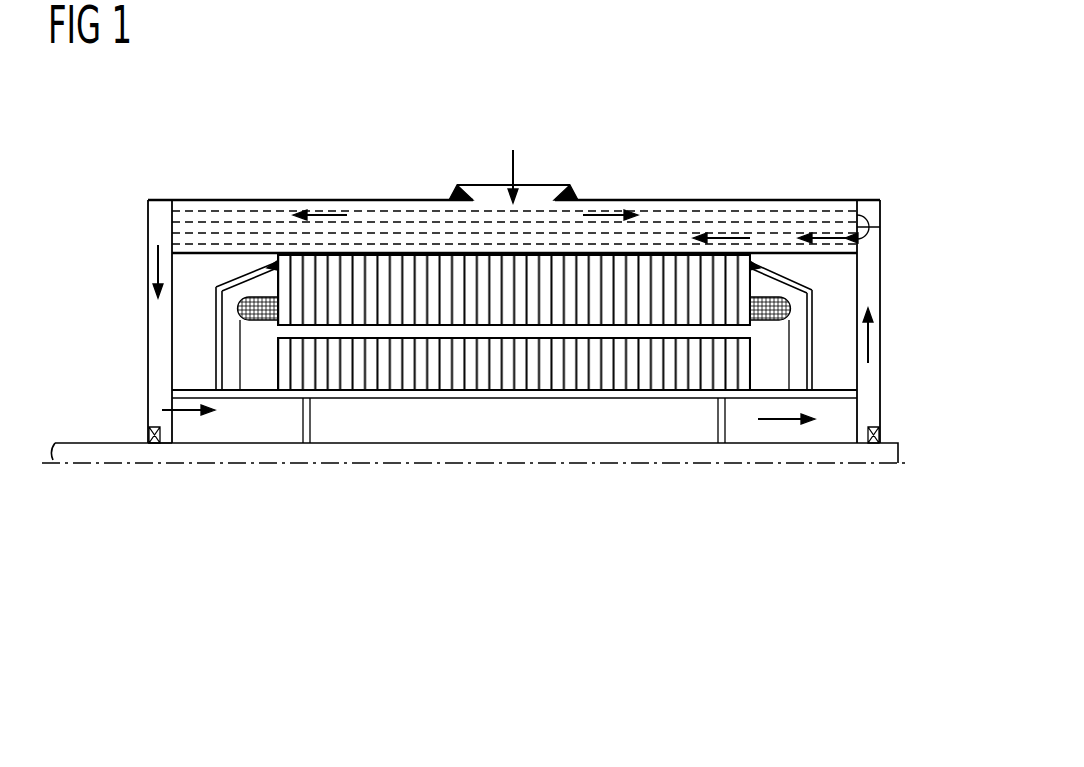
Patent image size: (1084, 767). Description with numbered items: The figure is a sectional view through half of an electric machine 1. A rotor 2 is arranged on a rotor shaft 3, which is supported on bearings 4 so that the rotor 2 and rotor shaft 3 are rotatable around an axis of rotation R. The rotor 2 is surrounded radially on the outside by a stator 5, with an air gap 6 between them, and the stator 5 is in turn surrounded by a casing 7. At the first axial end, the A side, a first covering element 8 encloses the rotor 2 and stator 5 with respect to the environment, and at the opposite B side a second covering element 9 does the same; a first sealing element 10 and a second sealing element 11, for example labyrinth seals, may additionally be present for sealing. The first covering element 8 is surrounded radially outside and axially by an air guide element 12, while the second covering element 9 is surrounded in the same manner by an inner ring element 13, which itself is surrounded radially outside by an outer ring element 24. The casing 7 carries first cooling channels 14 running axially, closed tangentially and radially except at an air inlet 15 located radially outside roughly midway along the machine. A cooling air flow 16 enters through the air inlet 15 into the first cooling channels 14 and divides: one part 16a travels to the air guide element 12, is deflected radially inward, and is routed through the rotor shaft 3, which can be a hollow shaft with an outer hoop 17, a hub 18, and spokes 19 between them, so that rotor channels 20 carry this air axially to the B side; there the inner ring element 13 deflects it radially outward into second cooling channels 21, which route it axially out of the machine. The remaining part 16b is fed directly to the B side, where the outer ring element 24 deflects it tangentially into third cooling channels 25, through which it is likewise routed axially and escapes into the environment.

The electric machine 1 is at (690, 100).
The rotor 2 is at (495, 360).
The rotor shaft 3 is at (127, 394).
The bearings 4 is at (148, 435).
The stator 5 is at (663, 277).
The air gap 6 is at (433, 330).
The casing 7 is at (198, 200).
The first covering element 8 is at (226, 282).
The second covering element 9 is at (793, 283).
The first sealing element 10 is at (270, 265).
The second sealing element 11 is at (760, 262).
The air guide element 12 is at (160, 217).
The inner ring element 13 is at (872, 277).
The first cooling channels 14 is at (377, 213).
The air inlet 15 is at (540, 177).
The cooling air flow 16 is at (510, 165).
The part of the cooling air flow 16a is at (323, 213).
The part of the cooling air flow 16b is at (597, 232).
The outer hoop 17 is at (563, 392).
The hub 18 is at (70, 442).
The spokes 19 is at (307, 423).
The rotor channels 20 is at (630, 418).
The second cooling channels 21 is at (514, 188).
The outer ring element 24 is at (870, 207).
The third cooling channels 25 is at (433, 235).
The axis of rotation R is at (92, 463).